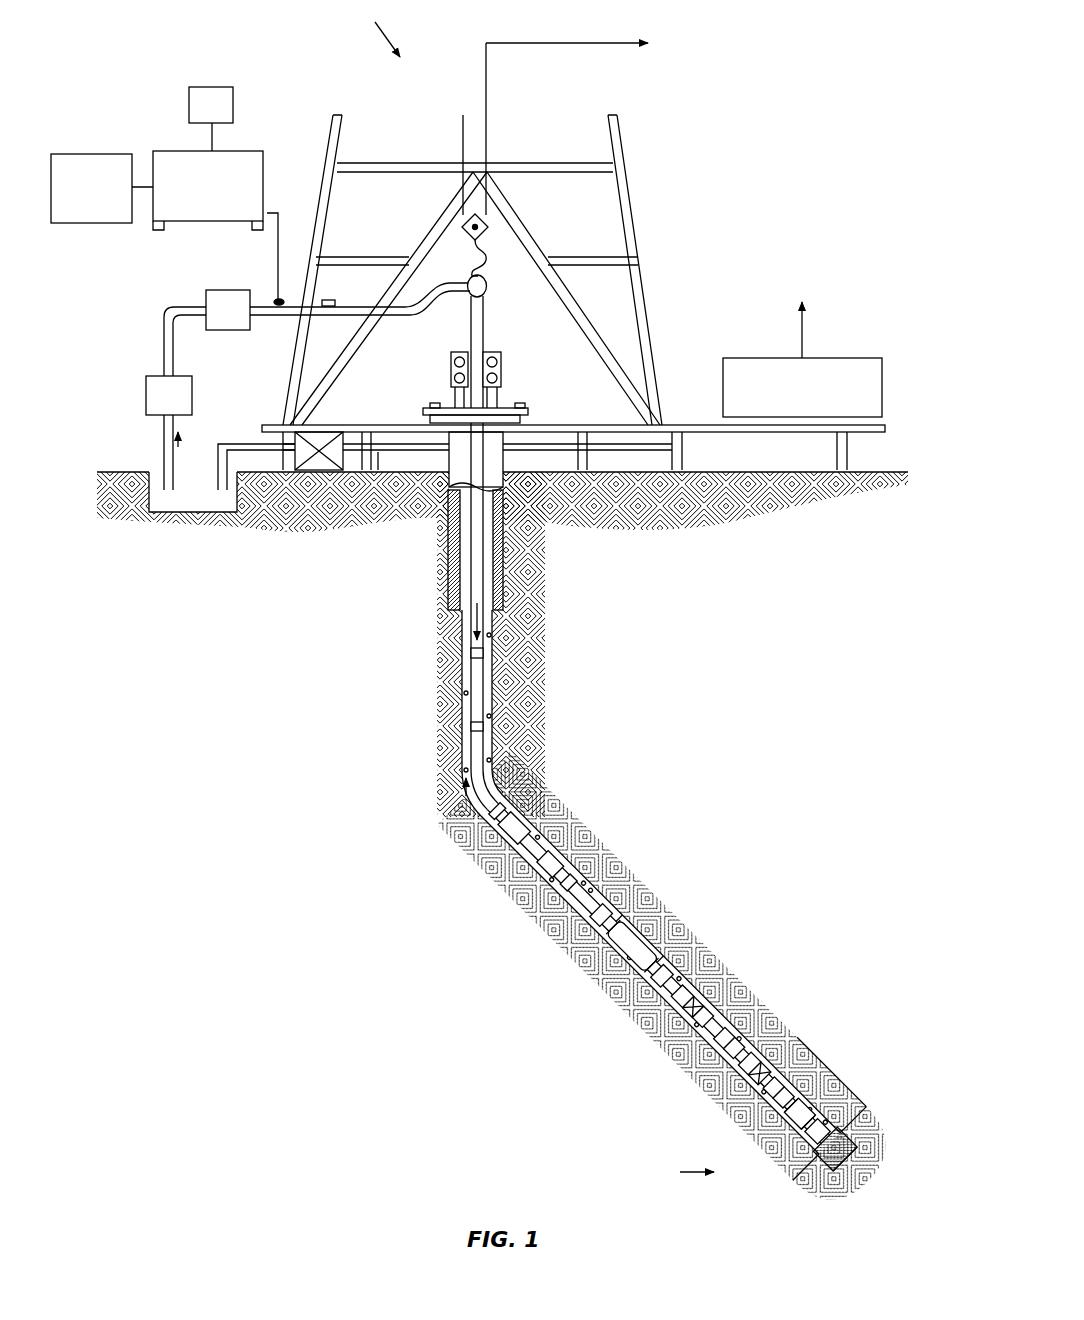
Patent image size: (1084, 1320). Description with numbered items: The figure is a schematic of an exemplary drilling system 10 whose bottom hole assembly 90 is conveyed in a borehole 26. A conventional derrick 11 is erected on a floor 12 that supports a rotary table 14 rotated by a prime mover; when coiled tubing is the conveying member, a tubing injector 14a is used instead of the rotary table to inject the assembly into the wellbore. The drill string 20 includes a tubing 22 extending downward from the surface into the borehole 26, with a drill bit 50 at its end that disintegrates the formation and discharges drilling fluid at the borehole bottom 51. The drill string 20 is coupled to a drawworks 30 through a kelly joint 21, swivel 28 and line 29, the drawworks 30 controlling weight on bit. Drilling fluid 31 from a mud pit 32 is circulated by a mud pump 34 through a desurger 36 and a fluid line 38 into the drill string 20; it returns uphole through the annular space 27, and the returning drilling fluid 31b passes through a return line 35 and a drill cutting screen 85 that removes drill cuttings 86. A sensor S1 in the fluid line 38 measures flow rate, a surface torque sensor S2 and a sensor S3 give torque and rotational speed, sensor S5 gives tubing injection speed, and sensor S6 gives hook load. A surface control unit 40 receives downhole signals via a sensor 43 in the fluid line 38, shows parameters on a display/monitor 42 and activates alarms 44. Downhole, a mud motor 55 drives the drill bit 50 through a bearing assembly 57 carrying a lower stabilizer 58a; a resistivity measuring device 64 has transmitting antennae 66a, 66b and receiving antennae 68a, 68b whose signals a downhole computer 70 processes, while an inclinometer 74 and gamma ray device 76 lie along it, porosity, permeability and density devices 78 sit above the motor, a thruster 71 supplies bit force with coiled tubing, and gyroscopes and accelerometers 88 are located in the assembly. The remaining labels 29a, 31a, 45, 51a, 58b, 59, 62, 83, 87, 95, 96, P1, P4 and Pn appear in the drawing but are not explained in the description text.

The drilling system 10 is at (373, 29).
The derrick 11 is at (640, 268).
The floor 12 is at (679, 425).
The rotary table 14 is at (503, 408).
The tubing injector 14a is at (502, 379).
The drill string 20 is at (493, 700).
The kelly joint 21 is at (486, 335).
The tubing 22 is at (470, 684).
The borehole 26 is at (500, 792).
The annular space 27 is at (530, 820).
The swivel 28 is at (470, 296).
The line 29 is at (488, 140).
The drill pipe in deviated section 29a is at (662, 932).
The drawworks 30 is at (859, 358).
The drilling fluid 31 is at (157, 492).
The downward mud flow 31a is at (465, 623).
The returning drilling fluid 31b is at (463, 792).
The mud pit 32 is at (216, 511).
The mud pump 34 is at (163, 386).
The return line 35 is at (378, 452).
The desurger 36 is at (206, 293).
The fluid line 38 is at (281, 318).
The surface control unit 40 is at (176, 152).
The display/monitor 42 is at (216, 86).
The sensor 43 is at (283, 298).
The alarms 44 is at (113, 225).
The signal line 45 is at (274, 210).
The drill bit 50 is at (858, 1138).
The borehole bottom 51 is at (826, 1190).
The bit face 51a is at (858, 1156).
The downhole motor 55 is at (560, 877).
The bearing assembly 57 is at (814, 1092).
The lower stabilizer 58a is at (820, 1101).
The upper seal 58b is at (618, 941).
The lower tool section 59 is at (803, 1129).
The stabilizer 62 is at (622, 906).
The resistivity measuring device 64 is at (705, 1058).
The transmitting antenna 66a is at (640, 966).
The transmitting antenna 66b is at (725, 1083).
The receiving antenna 68a is at (680, 1021).
The receiving antenna 68b is at (718, 983).
The downhole computer 70 is at (495, 842).
The thruster 71 is at (755, 1094).
The inclinometer 74 is at (735, 1013).
The gamma ray device 76 is at (770, 1041).
The formation porosity, permeability and density measuring devices 78 is at (478, 830).
The controller 83 is at (655, 1001).
The drill cutting screen 85 is at (315, 432).
The drill cuttings 86 is at (489, 760).
The casing 87 is at (505, 580).
The gyroscopes and accelerometers 88 is at (770, 1066).
The bottom hole assembly 90 is at (727, 882).
The formation 95 is at (871, 1045).
The formation fluid 96 is at (649, 1169).
The flow rate sensor S1 is at (330, 298).
The surface torque sensor S2 is at (526, 405).
The rotational speed sensor S3 is at (431, 404).
The tubing injection speed sensor S5 is at (488, 300).
The hook load sensor S6 is at (470, 283).
The pressure P1 is at (852, 1106).
The pressure P4 is at (600, 857).
The pressure Pn is at (471, 651).